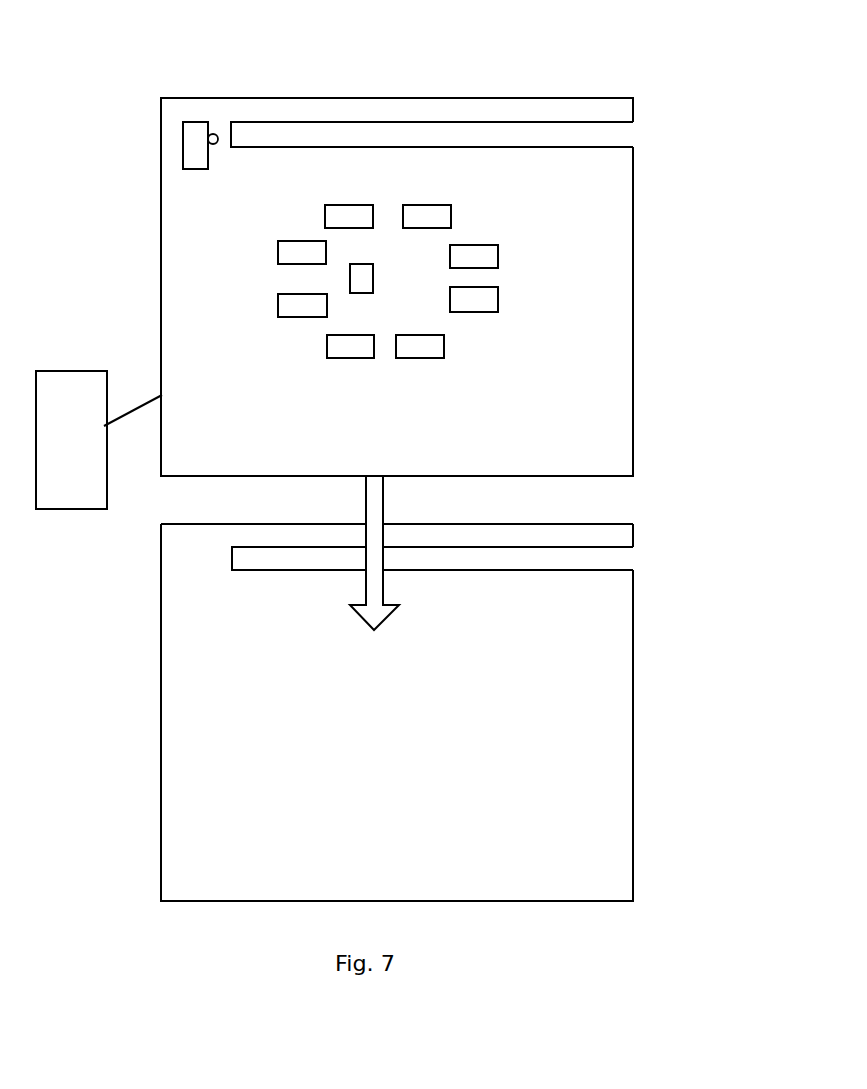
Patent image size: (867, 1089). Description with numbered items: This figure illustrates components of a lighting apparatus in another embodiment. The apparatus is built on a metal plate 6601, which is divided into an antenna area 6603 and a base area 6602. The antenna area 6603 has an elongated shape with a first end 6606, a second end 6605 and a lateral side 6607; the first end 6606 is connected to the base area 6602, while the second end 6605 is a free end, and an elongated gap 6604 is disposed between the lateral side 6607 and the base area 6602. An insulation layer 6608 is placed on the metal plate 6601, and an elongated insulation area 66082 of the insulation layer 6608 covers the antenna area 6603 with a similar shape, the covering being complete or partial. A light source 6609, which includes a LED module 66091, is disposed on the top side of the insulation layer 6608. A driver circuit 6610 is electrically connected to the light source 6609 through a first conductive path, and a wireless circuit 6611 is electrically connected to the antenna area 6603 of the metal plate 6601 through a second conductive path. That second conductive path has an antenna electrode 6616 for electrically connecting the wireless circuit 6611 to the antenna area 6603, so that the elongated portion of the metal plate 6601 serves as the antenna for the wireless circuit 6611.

The metal plate 6601 is at (545, 890).
The base area 6602 is at (622, 682).
The antenna area 6603 is at (613, 532).
The elongated gap 6604 is at (570, 560).
The second end 6605 is at (612, 535).
The first end 6606 is at (238, 547).
The lateral side 6607 is at (459, 550).
The insulation layer 6608 is at (634, 273).
The elongated insulation area 66082 is at (472, 110).
The light source 6609 is at (492, 302).
The LED module 66091 is at (483, 257).
The driver circuit 6610 is at (65, 374).
The wireless circuit 6611 is at (202, 122).
The antenna electrode 6616 is at (231, 126).